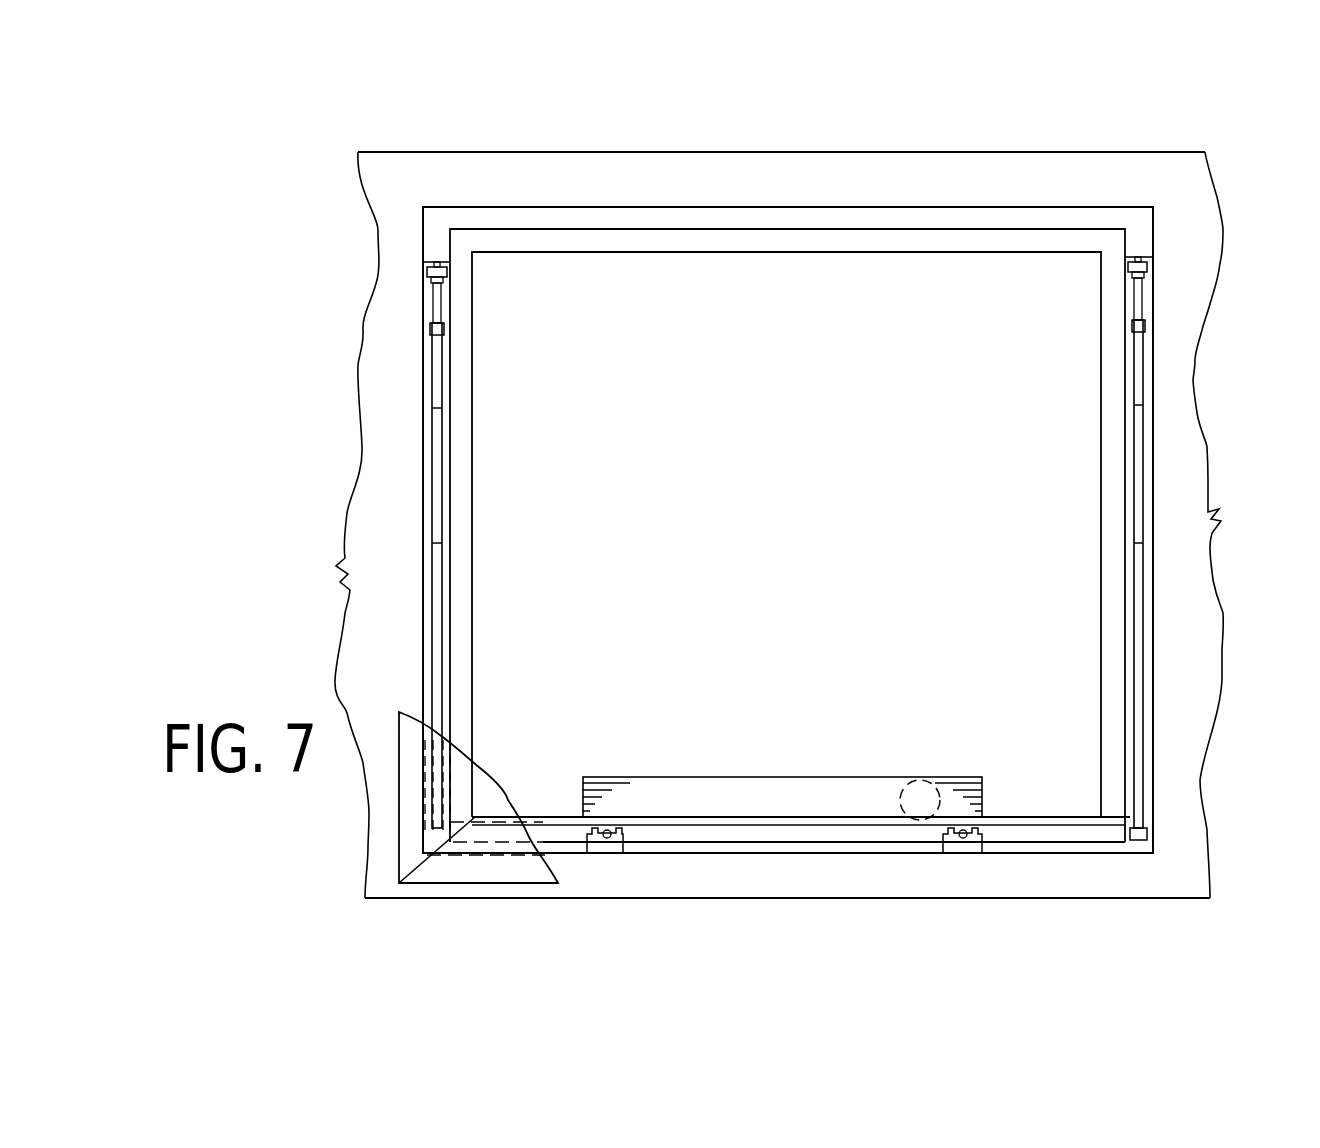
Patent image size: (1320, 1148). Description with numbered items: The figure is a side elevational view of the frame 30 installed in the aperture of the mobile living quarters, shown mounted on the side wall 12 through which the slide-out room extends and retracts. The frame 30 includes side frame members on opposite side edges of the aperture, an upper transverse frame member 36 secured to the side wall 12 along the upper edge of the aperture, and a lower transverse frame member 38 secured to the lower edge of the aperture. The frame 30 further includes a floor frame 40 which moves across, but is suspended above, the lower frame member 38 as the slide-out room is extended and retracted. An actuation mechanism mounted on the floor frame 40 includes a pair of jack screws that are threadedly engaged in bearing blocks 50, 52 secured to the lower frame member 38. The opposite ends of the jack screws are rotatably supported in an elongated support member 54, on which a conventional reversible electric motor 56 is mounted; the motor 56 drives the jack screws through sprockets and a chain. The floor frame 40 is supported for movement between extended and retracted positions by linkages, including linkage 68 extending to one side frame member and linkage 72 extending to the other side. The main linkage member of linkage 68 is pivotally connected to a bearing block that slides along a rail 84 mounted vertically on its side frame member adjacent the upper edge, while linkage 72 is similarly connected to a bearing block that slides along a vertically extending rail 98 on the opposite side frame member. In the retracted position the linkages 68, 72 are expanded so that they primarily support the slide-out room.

The side wall 12 is at (1190, 222).
The frame 30 is at (787, 208).
The upper transverse frame member 36 is at (823, 240).
The lower transverse frame member 38 is at (811, 854).
The floor frame 40 is at (1062, 833).
The bearing block 50 is at (963, 853).
The bearing block 52 is at (610, 853).
The elongated support member 54 is at (695, 800).
The reversible electric motor 56 is at (923, 777).
The linkage 68 is at (425, 450).
The linkage 72 is at (1143, 503).
The rail 84 is at (435, 305).
The rail 98 is at (1137, 305).